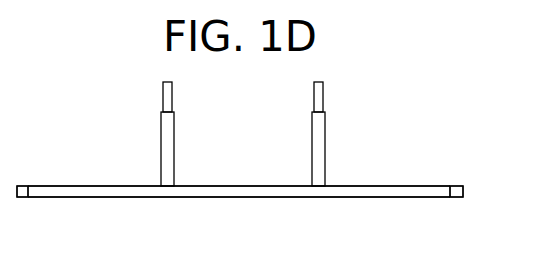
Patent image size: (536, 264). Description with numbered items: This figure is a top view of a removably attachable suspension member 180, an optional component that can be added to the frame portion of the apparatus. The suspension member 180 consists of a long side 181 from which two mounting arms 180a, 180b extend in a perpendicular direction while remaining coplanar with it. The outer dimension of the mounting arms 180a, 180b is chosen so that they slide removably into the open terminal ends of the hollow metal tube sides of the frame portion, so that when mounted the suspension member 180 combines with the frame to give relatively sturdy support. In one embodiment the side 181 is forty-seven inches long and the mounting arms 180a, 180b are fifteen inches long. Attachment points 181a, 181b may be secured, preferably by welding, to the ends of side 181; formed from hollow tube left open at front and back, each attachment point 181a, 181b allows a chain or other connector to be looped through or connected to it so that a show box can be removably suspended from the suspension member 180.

The removably attachable suspension member 180 is at (262, 88).
The mounting arm 180a is at (161, 137).
The mounting arm 180b is at (325, 138).
The side 181 is at (250, 197).
The attachment point 181a is at (22, 197).
The attachment point 181b is at (458, 197).